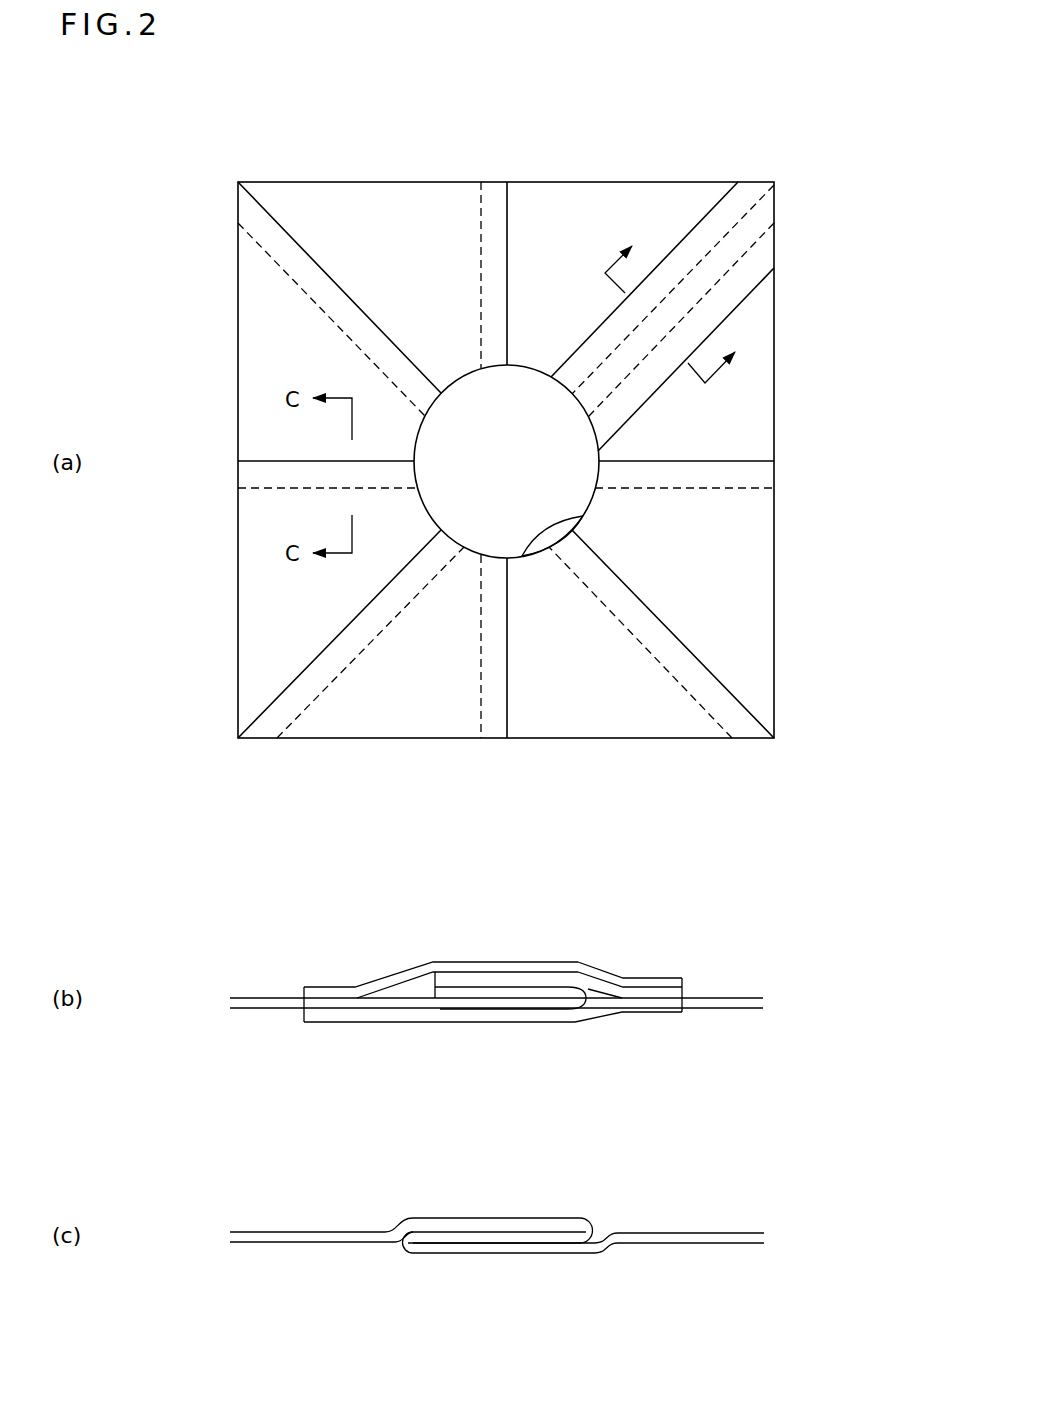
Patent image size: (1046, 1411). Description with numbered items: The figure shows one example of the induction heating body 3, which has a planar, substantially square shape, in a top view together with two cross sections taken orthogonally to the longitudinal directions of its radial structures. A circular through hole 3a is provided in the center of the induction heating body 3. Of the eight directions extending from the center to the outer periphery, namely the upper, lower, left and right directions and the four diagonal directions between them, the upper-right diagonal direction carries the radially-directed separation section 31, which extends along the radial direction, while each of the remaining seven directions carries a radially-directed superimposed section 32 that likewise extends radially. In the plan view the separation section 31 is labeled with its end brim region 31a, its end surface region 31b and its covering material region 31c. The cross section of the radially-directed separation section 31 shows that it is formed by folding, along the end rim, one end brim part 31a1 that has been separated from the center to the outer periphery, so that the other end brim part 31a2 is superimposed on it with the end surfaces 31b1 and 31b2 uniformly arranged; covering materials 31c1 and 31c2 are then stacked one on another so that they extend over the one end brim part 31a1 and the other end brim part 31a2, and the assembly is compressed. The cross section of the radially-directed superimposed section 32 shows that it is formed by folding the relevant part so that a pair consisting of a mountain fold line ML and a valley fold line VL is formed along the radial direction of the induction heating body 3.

The induction heating body 3 is at (228, 173).
The circular through hole 3a is at (583, 516).
The radially-directed separation section 31 is at (550, 588).
The central pleat layer 31a is at (752, 225).
The first pleat side layer 31b is at (750, 212).
The second pleat side layer 31c is at (750, 266).
The one end brim part 31a1 is at (503, 992).
The other end brim part 31a2 is at (507, 978).
The end surface 31b1 is at (432, 990).
The end surface 31b2 is at (430, 978).
The covering material 31c1 is at (643, 1012).
The covering material 31c2 is at (643, 977).
The radially-directed superimposed section 32 is at (499, 232).
The mountain fold line ML is at (280, 461).
The valley fold line VL is at (285, 490).